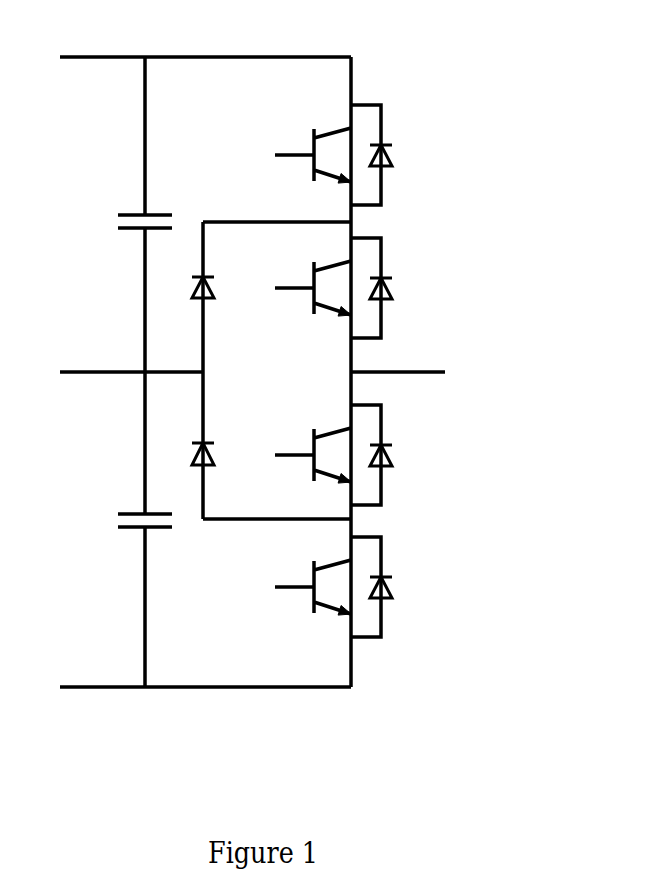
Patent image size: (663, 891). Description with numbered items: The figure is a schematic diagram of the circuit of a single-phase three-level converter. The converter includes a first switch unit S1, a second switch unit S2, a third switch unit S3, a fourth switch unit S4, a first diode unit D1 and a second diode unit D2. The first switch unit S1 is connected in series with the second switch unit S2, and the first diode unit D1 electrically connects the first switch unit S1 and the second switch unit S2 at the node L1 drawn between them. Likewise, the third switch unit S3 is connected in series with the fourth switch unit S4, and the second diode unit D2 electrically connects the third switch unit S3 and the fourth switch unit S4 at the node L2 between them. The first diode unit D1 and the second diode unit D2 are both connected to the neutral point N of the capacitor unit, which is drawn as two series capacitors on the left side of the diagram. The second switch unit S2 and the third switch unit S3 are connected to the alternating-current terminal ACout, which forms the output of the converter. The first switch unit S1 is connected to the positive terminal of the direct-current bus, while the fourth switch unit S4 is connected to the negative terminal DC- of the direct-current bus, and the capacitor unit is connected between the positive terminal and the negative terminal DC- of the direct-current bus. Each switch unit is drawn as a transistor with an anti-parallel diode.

The first switch unit S1 is at (354, 139).
The second switch unit S2 is at (354, 297).
The third switch unit S3 is at (354, 445).
The fourth switch unit S4 is at (354, 603).
The first diode unit D1 is at (225, 297).
The second diode unit D2 is at (225, 445).
The first intermediate node L1 is at (277, 204).
The second intermediate node L2 is at (277, 501).
The neutral point N is at (131, 348).
The negative terminal of the direct-current bus DC- is at (205, 663).
The alternating-current terminal ACout is at (444, 373).